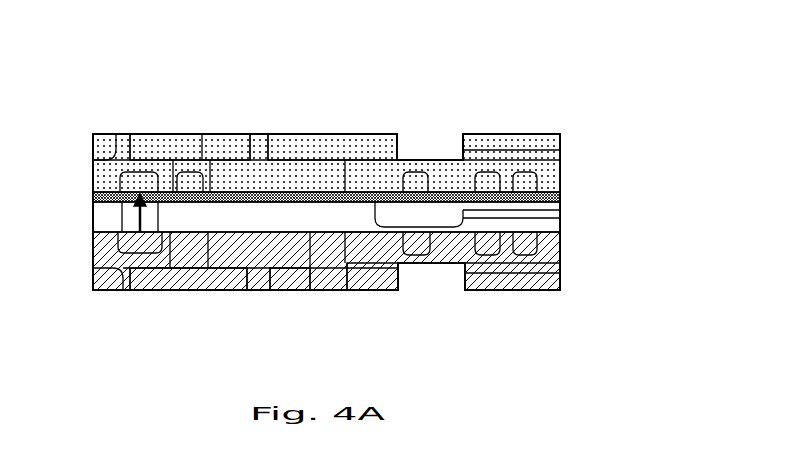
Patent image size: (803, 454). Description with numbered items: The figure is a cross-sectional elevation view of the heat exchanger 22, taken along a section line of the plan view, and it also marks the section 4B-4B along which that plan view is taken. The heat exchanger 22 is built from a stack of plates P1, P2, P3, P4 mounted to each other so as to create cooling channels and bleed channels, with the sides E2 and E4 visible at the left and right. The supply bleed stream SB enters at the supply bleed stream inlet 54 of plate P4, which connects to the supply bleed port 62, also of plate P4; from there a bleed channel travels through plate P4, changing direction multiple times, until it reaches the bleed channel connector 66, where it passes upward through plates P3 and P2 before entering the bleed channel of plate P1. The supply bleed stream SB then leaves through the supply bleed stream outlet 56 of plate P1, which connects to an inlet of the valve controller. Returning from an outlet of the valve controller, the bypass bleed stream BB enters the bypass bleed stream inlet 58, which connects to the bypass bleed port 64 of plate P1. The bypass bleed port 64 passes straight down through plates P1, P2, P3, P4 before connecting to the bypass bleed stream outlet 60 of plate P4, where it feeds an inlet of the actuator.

The heat exchanger 22 is at (134, 84).
The side E2 is at (92, 158).
The bleed channel connector 66 is at (133, 213).
The supply bleed stream outlet 56 is at (214, 140).
The supply bleed stream SB is at (192, 192).
The bypass bleed stream BB is at (327, 300).
The bypass bleed stream inlet 58 is at (355, 133).
The plate P1 is at (530, 133).
The plate P2 is at (560, 195).
The plate P3 is at (560, 228).
The side E4 is at (565, 237).
The section 4B- 4B is at (587, 243).
The supply bleed port 62 is at (152, 290).
The supply bleed stream inlet 54 is at (228, 290).
The bypass bleed port 64 is at (310, 290).
The bypass bleed stream outlet 60 is at (370, 290).
The plate P4 is at (527, 290).